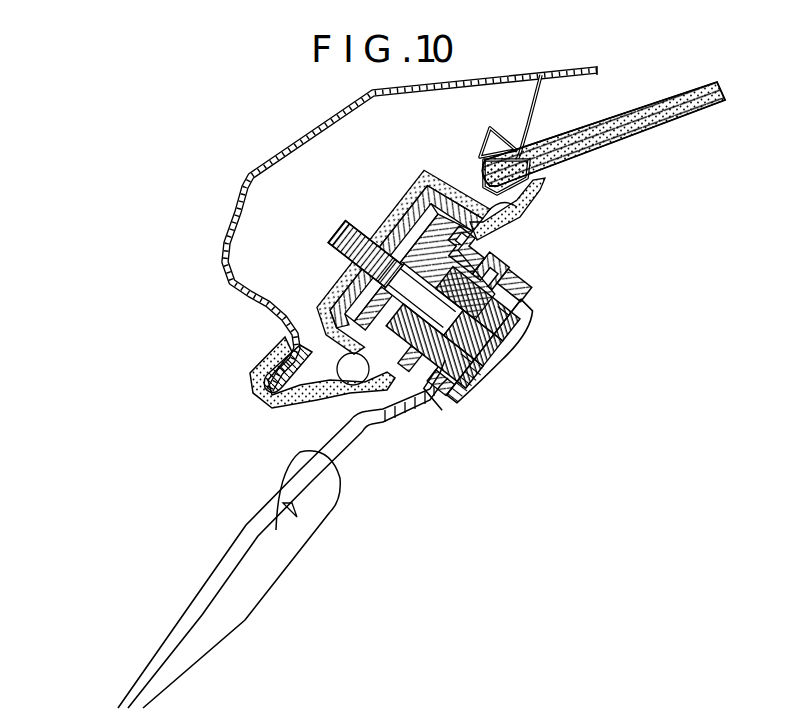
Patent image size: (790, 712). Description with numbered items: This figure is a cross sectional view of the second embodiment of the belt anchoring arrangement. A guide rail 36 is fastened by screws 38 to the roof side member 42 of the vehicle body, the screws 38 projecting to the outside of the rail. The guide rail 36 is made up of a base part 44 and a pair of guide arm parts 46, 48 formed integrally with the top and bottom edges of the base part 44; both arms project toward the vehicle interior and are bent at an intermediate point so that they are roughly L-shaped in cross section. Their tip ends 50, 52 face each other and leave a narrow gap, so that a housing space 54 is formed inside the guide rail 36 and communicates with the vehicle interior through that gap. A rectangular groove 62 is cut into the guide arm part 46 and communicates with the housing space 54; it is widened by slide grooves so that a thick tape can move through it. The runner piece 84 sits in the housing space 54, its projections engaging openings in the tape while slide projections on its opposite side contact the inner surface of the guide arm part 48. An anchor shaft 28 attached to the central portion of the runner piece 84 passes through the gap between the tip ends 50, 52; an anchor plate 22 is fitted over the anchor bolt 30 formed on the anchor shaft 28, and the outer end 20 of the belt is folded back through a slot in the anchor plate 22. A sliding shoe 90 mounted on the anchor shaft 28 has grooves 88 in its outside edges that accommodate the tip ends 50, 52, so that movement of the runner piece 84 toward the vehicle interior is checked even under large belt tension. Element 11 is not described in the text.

The seal strip 11 is at (673, 122).
The outer end 20 is at (310, 530).
The anchor plate 22 is at (372, 432).
The anchor shaft 28 is at (467, 280).
The anchor bolt 30 is at (530, 337).
The guide rail 36 is at (435, 173).
The screws 38 is at (333, 250).
The roof side member 42 is at (257, 312).
The base part 44 is at (420, 202).
The guide arm part 46 is at (518, 207).
The guide arm part 48 is at (363, 342).
The tip end 50 is at (487, 252).
The tip end 52 is at (410, 357).
The housing space 54 is at (410, 223).
The rectangular groove 62 is at (466, 190).
The runner piece 84 is at (360, 317).
The grooves 88 is at (383, 350).
The sliding shoe 90 is at (430, 403).